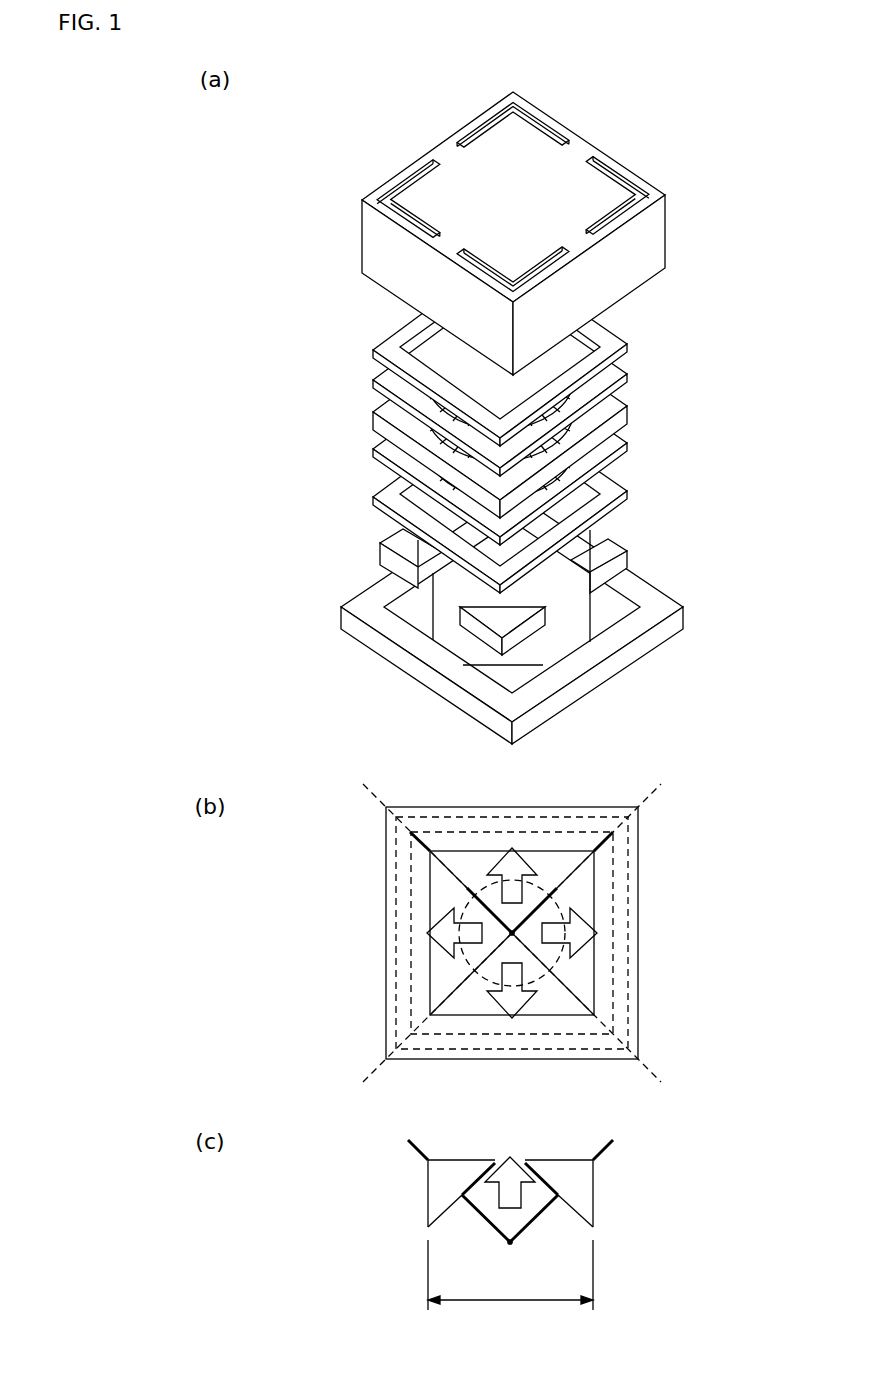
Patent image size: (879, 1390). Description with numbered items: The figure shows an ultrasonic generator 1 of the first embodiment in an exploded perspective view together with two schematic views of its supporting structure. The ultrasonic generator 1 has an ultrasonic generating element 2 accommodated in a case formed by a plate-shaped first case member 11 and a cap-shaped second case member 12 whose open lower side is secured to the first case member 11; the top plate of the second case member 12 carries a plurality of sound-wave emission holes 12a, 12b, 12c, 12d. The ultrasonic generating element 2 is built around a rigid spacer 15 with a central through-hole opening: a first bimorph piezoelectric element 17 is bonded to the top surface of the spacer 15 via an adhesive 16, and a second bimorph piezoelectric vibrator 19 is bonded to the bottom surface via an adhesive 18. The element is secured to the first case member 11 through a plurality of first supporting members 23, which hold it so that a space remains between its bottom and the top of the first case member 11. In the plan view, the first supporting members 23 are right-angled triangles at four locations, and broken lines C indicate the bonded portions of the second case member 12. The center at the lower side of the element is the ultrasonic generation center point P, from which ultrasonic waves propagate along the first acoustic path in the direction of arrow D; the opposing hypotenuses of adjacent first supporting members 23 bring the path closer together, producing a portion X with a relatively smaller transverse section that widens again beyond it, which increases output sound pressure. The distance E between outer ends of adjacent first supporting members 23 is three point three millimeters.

The ultrasonic generator 1 is at (296, 159).
The ultrasonic generating element 2 is at (552, 424).
The first case member 11 is at (670, 632).
The second case member 12 is at (522, 220).
The sound-wave emission hole 12a is at (480, 260).
The sound-wave emission hole 12b is at (622, 203).
The sound-wave emission hole 12c is at (552, 132).
The sound-wave emission hole 12d is at (416, 178).
The spacer 15 is at (627, 418).
The adhesive 16 is at (627, 377).
The first bimorph piezoelectric element 17 is at (531, 351).
The adhesive 18 is at (627, 452).
The second bimorph piezoelectric vibrator 19 is at (627, 497).
The first supporting member 23 is at (380, 553).
The arrow D is at (527, 890).
The ultrasonic generation center point P is at (512, 933).
The broken lines C is at (630, 927).
The portion X is at (522, 1160).
The distance E is at (510, 1286).